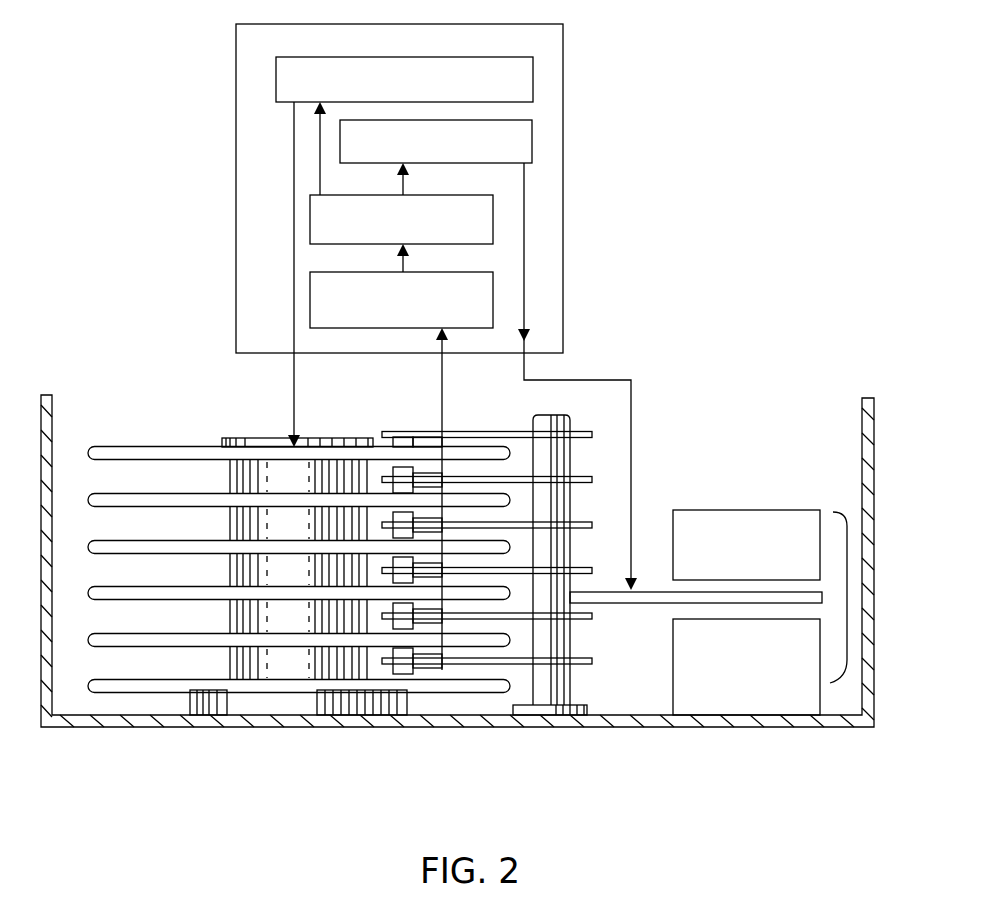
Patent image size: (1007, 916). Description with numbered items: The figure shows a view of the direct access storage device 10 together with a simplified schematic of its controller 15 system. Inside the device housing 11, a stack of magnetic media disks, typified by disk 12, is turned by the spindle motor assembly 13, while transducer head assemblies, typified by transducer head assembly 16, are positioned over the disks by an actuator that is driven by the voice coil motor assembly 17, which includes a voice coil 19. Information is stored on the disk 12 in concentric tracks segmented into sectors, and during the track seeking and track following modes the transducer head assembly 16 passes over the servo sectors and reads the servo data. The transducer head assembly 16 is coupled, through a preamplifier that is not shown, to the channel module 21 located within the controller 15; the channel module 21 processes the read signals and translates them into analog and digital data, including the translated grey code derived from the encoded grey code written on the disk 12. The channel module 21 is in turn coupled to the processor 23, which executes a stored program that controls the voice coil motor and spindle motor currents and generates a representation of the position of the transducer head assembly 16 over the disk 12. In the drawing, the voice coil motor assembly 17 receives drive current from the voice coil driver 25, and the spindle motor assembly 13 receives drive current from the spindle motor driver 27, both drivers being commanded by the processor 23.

The direct access storage device 10 is at (713, 252).
The device housing 11 is at (875, 414).
The disk 12 is at (152, 447).
The spindle motor assembly 13 is at (268, 438).
The controller 15 is at (565, 322).
The transducer head assembly 16 is at (401, 442).
The voice coil motor assembly 17 is at (852, 555).
The voice coil 19 is at (833, 601).
The channel module 21 is at (487, 300).
The processor 23 is at (485, 218).
The voice coil driver 25 is at (522, 138).
The spindle motor driver 27 is at (522, 78).